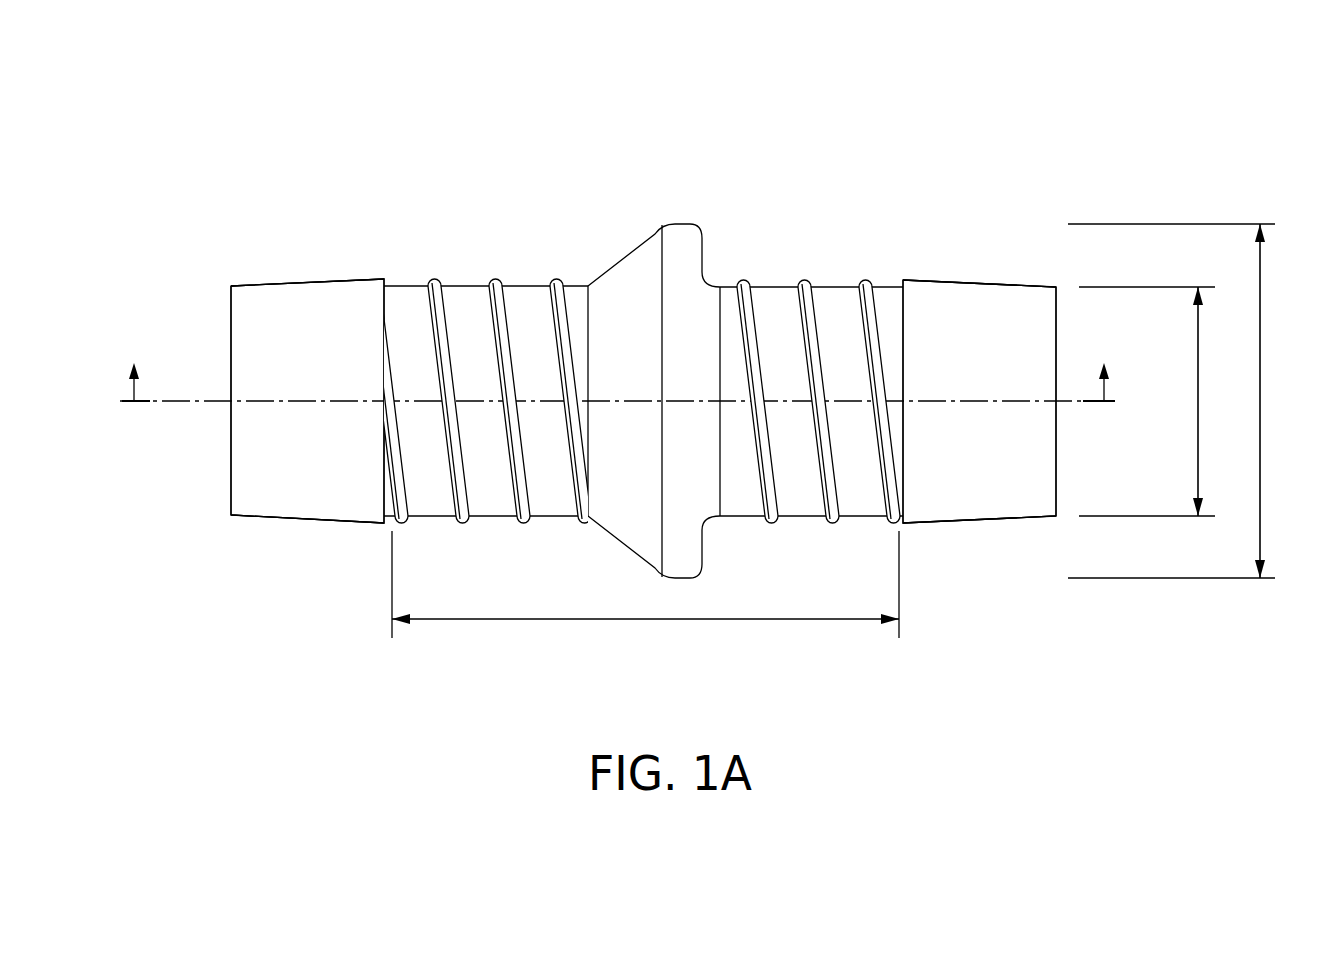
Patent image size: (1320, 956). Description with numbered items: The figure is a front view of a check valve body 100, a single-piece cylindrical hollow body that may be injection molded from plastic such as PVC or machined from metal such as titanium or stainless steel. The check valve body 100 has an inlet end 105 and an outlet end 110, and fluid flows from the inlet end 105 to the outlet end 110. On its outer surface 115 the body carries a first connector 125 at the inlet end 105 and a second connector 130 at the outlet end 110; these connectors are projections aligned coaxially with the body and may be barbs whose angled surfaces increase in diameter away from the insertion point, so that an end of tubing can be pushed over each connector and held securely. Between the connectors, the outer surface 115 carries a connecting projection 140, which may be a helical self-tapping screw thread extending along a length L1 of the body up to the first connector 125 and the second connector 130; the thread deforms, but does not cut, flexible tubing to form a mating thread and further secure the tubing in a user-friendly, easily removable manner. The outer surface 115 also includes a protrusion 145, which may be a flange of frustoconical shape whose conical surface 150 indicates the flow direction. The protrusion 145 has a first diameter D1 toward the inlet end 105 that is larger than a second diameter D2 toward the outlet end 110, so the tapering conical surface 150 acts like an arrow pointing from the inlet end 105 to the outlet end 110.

The check valve body 100 is at (197, 165).
The inlet end 105 is at (960, 575).
The outlet end 110 is at (310, 545).
The outer surface 115 is at (470, 243).
The first connector 125 is at (1042, 232).
The second connector 130 is at (323, 242).
The connecting projection 140 is at (805, 283).
The protrusion 145 is at (625, 208).
The conical surface 150 is at (630, 250).
The first diameter D1 is at (675, 222).
The second diameter D2 is at (535, 552).
The length L1 is at (645, 592).